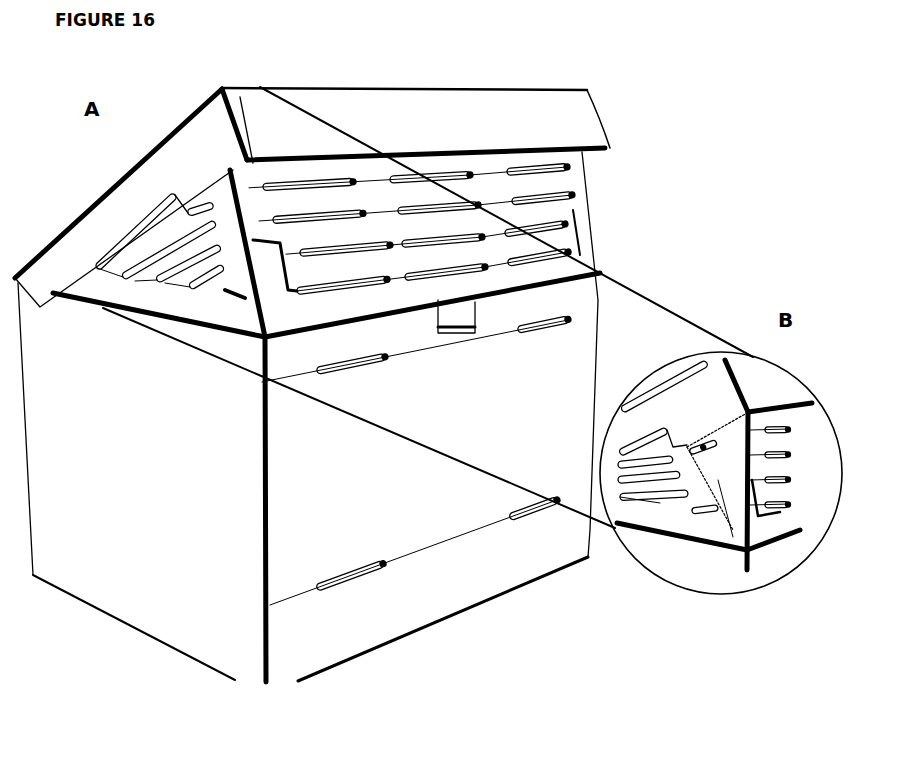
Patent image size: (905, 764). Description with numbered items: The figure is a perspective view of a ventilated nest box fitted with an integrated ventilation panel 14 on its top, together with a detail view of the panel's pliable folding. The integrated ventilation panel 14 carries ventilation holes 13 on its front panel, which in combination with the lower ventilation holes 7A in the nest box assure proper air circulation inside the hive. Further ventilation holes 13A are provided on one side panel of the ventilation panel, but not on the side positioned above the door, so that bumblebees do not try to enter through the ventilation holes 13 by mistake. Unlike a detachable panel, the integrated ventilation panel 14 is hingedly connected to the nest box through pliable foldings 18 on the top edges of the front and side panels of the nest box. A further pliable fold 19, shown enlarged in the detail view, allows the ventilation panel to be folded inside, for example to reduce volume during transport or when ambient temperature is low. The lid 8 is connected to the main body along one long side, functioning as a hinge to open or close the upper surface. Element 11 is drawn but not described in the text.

The lid 8 is at (555, 120).
The integrated ventilation panel 14 is at (618, 193).
The pliable foldings 18 is at (326, 366).
The ventilation holes 13 is at (487, 228).
The further ventilation holes 13A is at (195, 255).
The cartridge 11 is at (417, 357).
The lower ventilation holes 7A is at (415, 573).
The pliable fold 19 is at (740, 464).